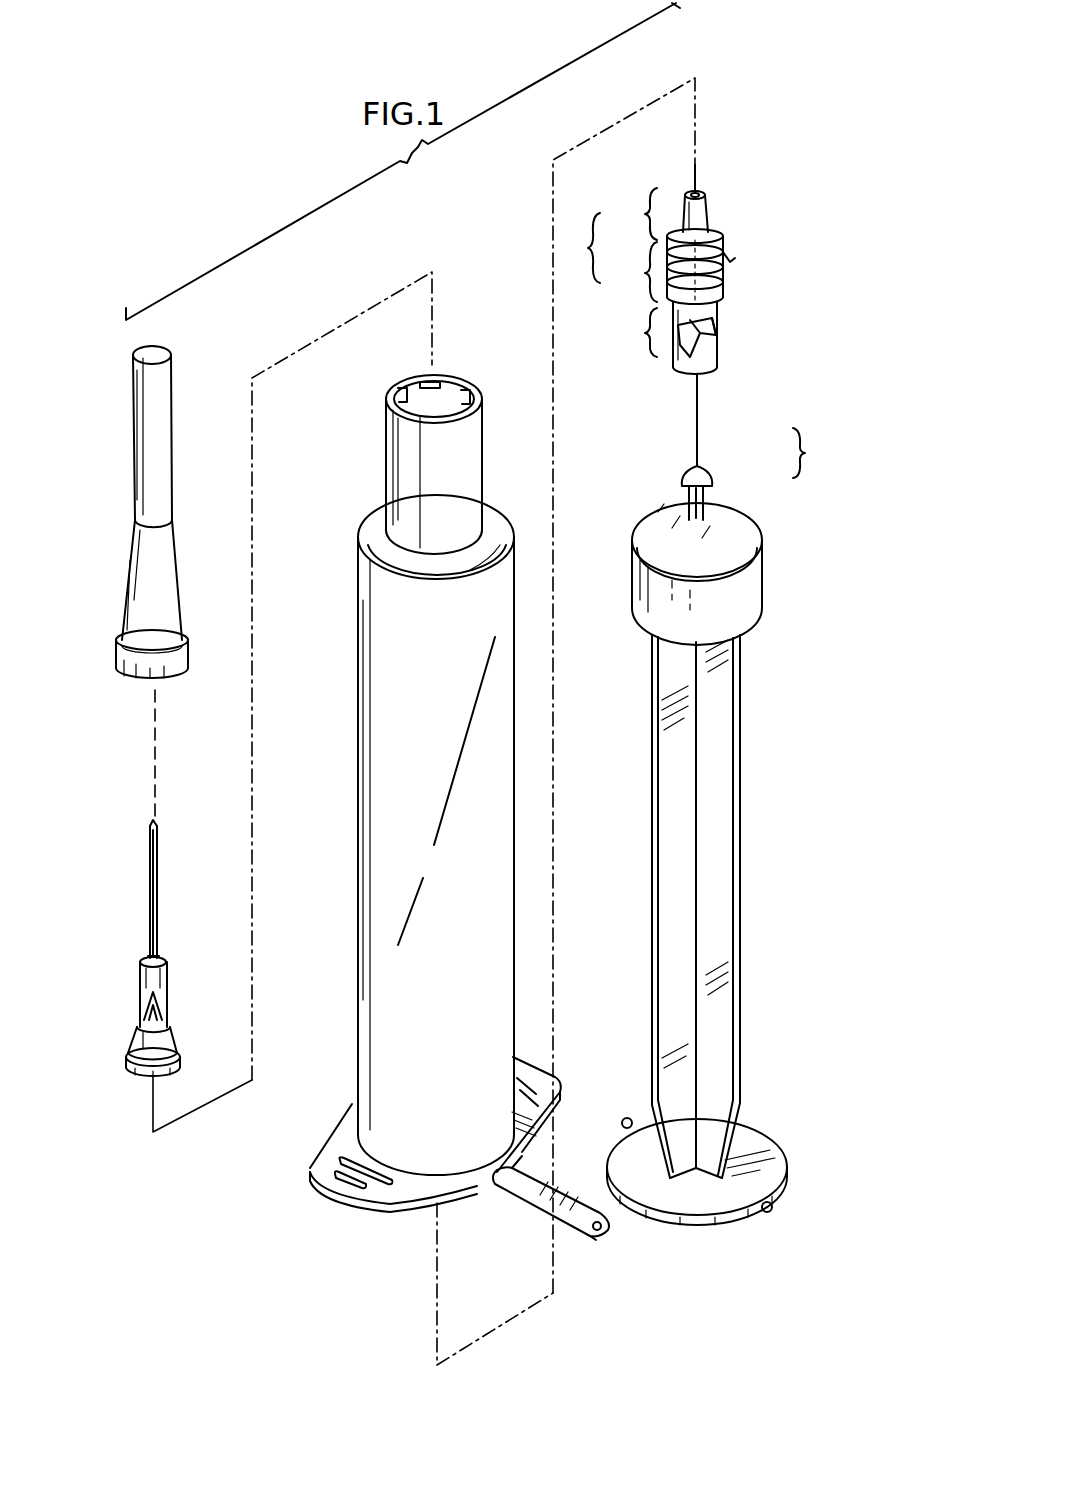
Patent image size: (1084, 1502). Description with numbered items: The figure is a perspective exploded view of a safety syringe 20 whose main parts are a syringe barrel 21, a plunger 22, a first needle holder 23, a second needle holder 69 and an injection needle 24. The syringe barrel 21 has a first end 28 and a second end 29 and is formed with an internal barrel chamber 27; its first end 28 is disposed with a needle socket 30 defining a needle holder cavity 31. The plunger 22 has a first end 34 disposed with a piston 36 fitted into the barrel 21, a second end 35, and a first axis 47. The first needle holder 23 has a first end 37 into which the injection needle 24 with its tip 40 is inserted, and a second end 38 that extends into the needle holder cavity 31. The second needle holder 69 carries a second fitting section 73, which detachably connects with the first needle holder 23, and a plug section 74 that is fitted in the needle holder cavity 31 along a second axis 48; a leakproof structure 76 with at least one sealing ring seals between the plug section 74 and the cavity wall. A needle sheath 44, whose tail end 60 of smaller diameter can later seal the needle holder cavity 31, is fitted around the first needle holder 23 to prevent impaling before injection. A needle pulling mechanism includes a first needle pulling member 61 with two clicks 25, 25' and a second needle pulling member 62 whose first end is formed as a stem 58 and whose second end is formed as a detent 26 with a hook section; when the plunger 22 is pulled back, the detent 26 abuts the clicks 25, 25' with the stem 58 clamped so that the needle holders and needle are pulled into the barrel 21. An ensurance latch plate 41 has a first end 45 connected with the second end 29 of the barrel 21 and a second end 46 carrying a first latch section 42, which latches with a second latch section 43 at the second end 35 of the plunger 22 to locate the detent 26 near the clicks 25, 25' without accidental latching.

The safety syringe 20 is at (429, 231).
The syringe barrel 21 is at (370, 710).
The plunger 22 is at (740, 804).
The first needle holder 23 is at (135, 1045).
The injection needle 24 is at (158, 893).
The click 25 is at (673, 360).
The click 25' is at (754, 311).
The detent 26 is at (705, 470).
The barrel chamber 27 is at (495, 818).
The first end of syringe barrel 28 is at (498, 527).
The second end of syringe barrel 29 is at (396, 1221).
The needle socket 30 is at (470, 448).
The needle holder cavity 31 is at (445, 393).
The first end of plunger 34 is at (746, 547).
The second end of plunger 35 is at (722, 1233).
The piston 36 is at (758, 596).
The first end of first needle holder 37 is at (168, 948).
The second end of first needle holder 38 is at (131, 1091).
The tip of injection needle 40 is at (157, 826).
The ensurance latch plate 41 is at (520, 1190).
The first latch section 42 is at (603, 1232).
The second latch section 43 is at (624, 1118).
The needle sheath 44 is at (170, 586).
The first end of latch plate 45 is at (536, 1152).
The second end of latch plate 46 is at (598, 1250).
The first axis 47 is at (700, 411).
The second axis 48 is at (698, 165).
The stem 58 is at (704, 500).
The tail end of needle sheath 60 is at (162, 352).
The first needle pulling member 61 is at (659, 338).
The second needle pulling member 62 is at (817, 451).
The second needle holder 69 is at (576, 248).
The second fitting section 73 is at (655, 214).
The plug section 74 is at (663, 266).
The leakproof structure 76 is at (737, 251).